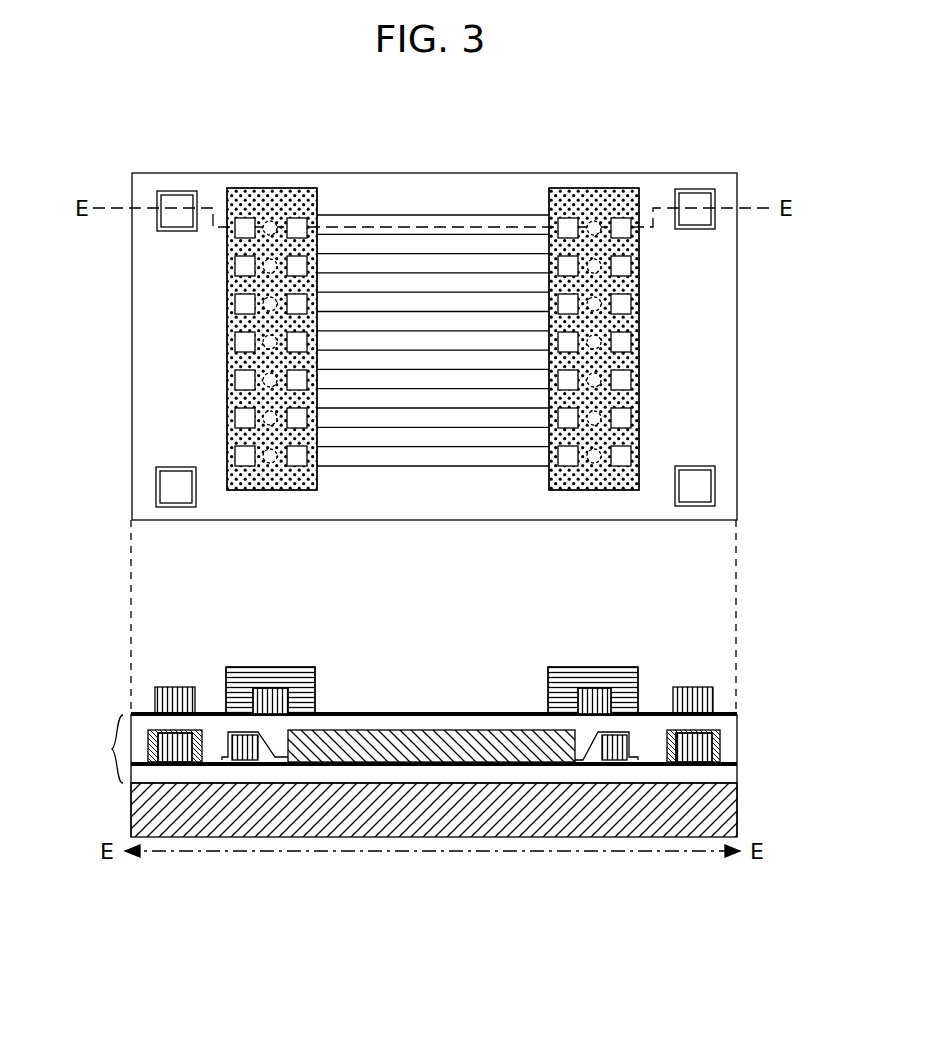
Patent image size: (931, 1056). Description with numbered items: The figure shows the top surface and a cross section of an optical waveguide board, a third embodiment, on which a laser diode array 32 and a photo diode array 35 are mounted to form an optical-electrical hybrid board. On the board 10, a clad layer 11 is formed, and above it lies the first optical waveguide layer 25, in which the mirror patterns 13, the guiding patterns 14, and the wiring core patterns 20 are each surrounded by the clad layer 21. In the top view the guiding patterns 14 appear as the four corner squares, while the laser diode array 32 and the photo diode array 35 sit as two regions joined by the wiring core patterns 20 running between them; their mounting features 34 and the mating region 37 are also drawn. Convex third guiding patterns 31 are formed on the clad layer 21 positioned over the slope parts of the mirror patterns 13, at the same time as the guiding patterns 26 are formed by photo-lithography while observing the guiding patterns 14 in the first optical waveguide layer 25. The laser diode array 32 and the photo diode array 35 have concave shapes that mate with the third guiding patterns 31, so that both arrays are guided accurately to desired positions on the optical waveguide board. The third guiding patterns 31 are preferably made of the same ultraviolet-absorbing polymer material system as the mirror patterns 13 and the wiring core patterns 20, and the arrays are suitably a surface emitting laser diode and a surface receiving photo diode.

The board 10 is at (733, 803).
The clad layer 11 is at (733, 772).
The mirror patterns 13 is at (250, 761).
The guiding patterns 14 is at (175, 202).
The wiring core patterns 20 is at (410, 729).
The clad layer 21 is at (722, 723).
The first optical waveguide layer 25 is at (112, 750).
The guiding patterns 26 is at (176, 687).
The third guiding patterns 31 is at (272, 700).
The laser diode array 32 is at (270, 190).
The contact portion 34 is at (297, 455).
The photo diode array 35 is at (594, 190).
The resin layer 37 is at (250, 690).